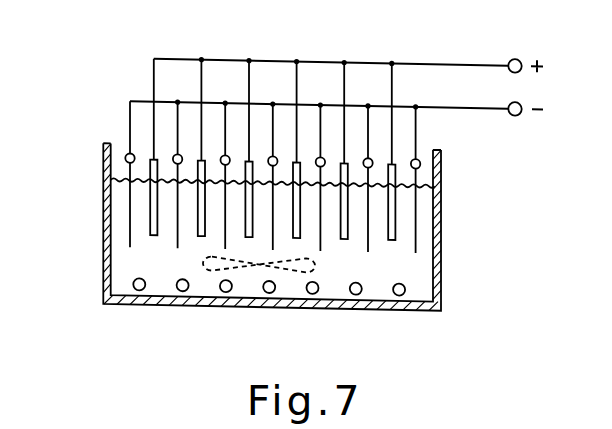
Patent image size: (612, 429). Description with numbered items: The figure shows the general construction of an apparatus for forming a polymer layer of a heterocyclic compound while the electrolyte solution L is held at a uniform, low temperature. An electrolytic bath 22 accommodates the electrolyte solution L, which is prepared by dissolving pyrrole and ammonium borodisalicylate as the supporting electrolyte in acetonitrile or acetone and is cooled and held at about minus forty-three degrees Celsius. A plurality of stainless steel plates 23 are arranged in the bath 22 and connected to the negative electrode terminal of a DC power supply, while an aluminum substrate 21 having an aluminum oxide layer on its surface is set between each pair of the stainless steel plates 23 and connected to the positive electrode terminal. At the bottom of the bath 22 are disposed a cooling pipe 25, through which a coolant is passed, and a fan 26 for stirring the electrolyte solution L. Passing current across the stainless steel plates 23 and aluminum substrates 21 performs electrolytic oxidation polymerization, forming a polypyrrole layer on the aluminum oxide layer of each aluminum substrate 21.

The aluminum substrate 21 is at (397, 170).
The electrolytic bath 22 is at (441, 254).
The stainless steel plate 23 is at (415, 205).
The cooling pipe 25 is at (399, 293).
The fan 26 is at (212, 271).
The electrolyte solution L is at (113, 255).